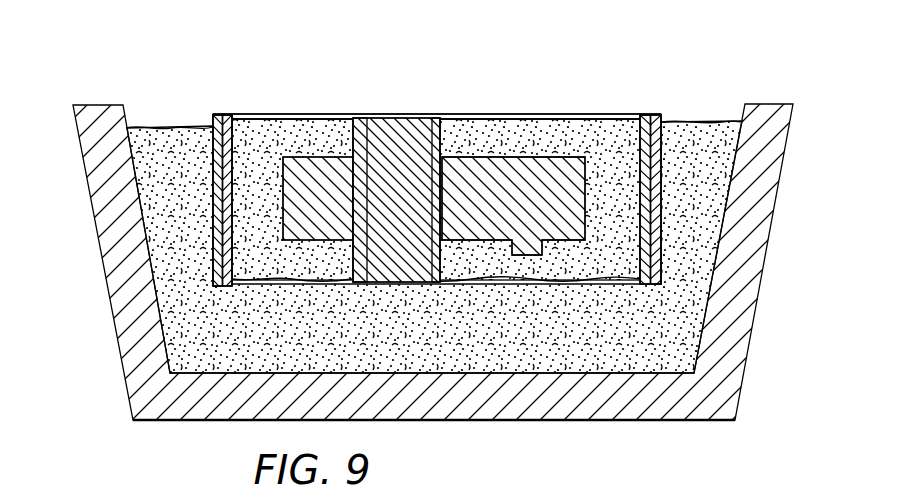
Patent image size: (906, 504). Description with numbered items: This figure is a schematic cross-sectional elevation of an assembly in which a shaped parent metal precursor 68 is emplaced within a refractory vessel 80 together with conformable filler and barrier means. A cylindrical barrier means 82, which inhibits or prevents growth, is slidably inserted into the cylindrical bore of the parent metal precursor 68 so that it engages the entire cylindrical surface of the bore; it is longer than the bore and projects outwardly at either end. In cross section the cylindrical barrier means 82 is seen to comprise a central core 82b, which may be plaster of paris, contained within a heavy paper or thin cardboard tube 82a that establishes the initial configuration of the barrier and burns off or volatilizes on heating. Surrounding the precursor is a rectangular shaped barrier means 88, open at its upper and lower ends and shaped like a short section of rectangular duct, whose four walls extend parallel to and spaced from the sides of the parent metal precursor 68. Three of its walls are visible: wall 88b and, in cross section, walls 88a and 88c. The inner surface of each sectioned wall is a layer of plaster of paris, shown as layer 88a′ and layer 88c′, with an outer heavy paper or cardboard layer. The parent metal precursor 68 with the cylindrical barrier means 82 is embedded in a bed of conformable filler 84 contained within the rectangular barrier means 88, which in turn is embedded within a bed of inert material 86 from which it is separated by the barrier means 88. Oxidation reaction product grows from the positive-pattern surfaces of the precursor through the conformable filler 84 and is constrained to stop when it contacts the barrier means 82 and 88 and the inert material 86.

The refractory vessel 80 is at (150, 352).
The inert material 86 is at (176, 127).
The conformable filler 84 is at (263, 133).
The rectangular shaped barrier means 88 is at (473, 114).
The wall 88a is at (660, 157).
The plaster of paris layer 88a′ is at (643, 214).
The wall 88b is at (328, 114).
The wall 88c is at (213, 181).
The plaster of paris layer 88c′ is at (213, 220).
The cylindrical barrier means 82 is at (404, 203).
The paper or cardboard tube 82a is at (372, 114).
The central core 82b is at (404, 114).
The parent metal precursor 68 is at (482, 210).